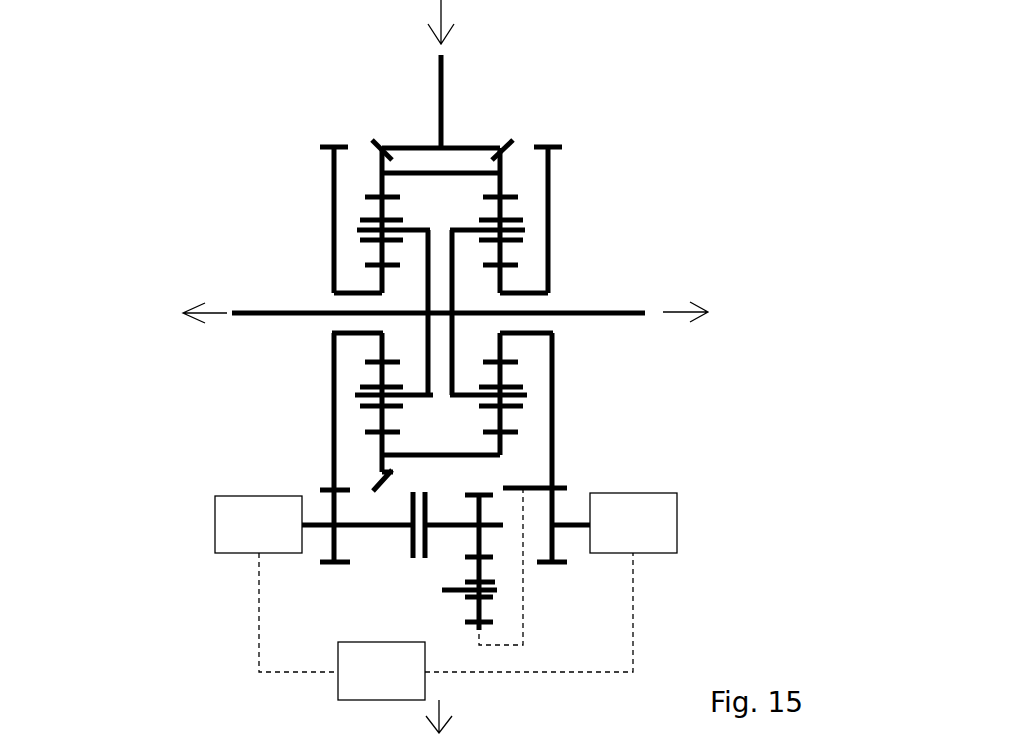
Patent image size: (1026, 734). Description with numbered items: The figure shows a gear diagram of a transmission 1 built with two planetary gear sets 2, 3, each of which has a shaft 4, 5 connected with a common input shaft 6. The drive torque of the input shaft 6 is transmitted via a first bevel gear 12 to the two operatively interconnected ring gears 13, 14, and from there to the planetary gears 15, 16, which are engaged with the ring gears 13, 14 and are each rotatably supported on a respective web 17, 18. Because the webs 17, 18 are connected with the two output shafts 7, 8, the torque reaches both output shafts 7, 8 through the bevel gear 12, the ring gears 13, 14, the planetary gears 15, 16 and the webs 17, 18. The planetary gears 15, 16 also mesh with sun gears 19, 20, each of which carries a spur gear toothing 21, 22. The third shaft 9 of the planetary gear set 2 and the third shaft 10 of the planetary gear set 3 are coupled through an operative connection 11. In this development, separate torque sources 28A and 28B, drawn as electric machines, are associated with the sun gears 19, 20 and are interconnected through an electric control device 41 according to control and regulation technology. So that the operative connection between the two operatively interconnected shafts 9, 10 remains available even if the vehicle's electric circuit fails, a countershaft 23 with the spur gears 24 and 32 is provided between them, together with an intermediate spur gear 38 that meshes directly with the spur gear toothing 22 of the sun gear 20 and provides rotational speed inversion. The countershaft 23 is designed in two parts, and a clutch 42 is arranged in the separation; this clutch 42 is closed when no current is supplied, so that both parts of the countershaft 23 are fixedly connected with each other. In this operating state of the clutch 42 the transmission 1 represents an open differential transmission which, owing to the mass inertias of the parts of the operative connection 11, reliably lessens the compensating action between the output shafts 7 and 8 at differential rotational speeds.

The transmission 1 is at (108, 172).
The planetary gear set 2 is at (275, 210).
The planetary gear set 3 is at (575, 182).
The shaft 4 is at (368, 160).
The shaft 5 is at (513, 173).
The input shaft 6 is at (445, 67).
The output shaft 7 is at (255, 313).
The output shaft 8 is at (637, 312).
The third shaft 9 is at (318, 388).
The third shaft 10 is at (574, 382).
The operative connection 11 is at (617, 680).
The first bevel gear 12 is at (400, 146).
The ring gear 13 is at (380, 438).
The ring gear 14 is at (505, 436).
The planetary gear 15 is at (380, 370).
The planetary gear 16 is at (505, 370).
The web 17 is at (380, 265).
The web 18 is at (505, 265).
The sun gear 19 is at (380, 283).
The sun gear 20 is at (505, 283).
The spur gear toothing 21 is at (326, 490).
The spur gear toothing 22 is at (567, 487).
The countershaft 23 is at (370, 528).
The spur gear 24 is at (325, 560).
The torque source 28A is at (208, 512).
The torque source 28B is at (683, 524).
The spur gear 32 is at (481, 545).
The intermediate spur gear 38 is at (481, 610).
The electric control device 41 is at (348, 658).
The clutch 42 is at (417, 564).